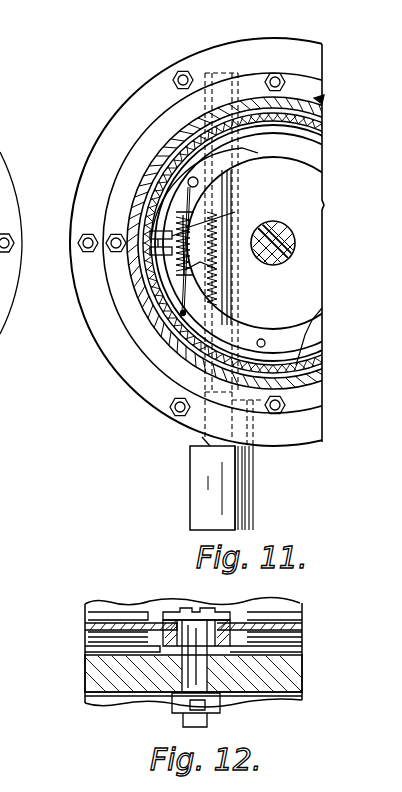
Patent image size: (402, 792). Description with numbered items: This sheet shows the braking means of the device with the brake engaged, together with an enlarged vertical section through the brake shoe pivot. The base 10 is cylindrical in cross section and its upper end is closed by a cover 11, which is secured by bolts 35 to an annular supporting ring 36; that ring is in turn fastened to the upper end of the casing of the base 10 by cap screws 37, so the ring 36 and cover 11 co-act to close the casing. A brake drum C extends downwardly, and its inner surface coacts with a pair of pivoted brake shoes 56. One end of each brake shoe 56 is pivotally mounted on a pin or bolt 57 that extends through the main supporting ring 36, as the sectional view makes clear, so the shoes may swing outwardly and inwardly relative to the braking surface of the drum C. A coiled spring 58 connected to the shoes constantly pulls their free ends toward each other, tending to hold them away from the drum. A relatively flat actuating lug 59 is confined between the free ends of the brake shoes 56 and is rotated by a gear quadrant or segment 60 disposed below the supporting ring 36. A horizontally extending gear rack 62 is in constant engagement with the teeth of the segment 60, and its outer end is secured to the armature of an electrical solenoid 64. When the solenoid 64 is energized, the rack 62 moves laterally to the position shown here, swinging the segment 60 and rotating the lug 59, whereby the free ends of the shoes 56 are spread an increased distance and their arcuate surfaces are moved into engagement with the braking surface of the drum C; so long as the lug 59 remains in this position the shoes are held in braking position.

In FIG. 11, the base 10 is at (125, 108).
In FIG. 11, the brake drum C is at (160, 160).
In FIG. 11, the cover 11 is at (160, 174).
In FIG. 11, the bolts 35 is at (275, 76).
In FIG. 11, the brake shoes 56 is at (287, 128).
In FIG. 12, the brake shoes 56 is at (88, 614).
In FIG. 12, the pin or bolt 57 is at (182, 614).
In FIG. 11, the coiled spring 58 is at (215, 267).
In FIG. 11, the actuating lug 59 is at (148, 243).
In FIG. 11, the gear quadrant or segment 60 is at (226, 226).
In FIG. 11, the gear rack 62 is at (235, 308).
In FIG. 11, the cap screws 37 is at (166, 412).
In FIG. 11, the electrical solenoid 64 is at (200, 486).
In FIG. 12, the annular supporting ring 36 is at (255, 694).